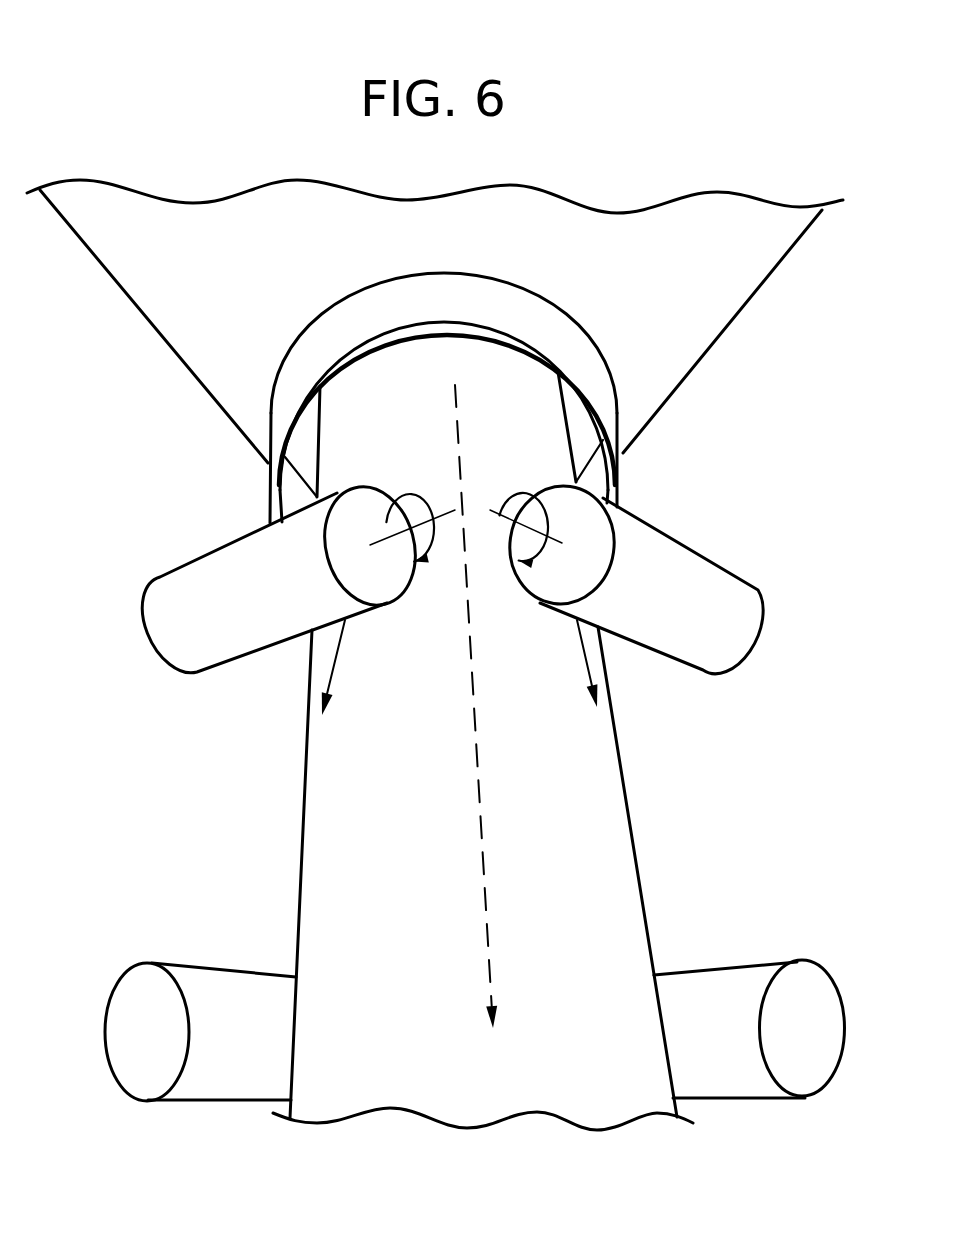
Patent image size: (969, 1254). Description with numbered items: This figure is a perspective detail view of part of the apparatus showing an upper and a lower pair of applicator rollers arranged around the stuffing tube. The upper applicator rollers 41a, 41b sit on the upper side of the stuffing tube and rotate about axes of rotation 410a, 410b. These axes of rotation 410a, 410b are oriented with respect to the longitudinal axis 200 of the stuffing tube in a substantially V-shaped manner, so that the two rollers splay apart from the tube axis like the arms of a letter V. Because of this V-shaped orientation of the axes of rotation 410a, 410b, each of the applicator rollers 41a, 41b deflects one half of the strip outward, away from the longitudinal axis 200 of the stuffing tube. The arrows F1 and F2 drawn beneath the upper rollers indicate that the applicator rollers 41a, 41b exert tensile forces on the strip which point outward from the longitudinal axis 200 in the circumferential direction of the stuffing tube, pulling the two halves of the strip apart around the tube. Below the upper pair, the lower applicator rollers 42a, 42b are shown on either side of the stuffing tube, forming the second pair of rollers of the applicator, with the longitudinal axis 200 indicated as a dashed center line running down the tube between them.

The applicator roller 41a is at (752, 598).
The applicator roller 41b is at (153, 604).
The axis of rotation 410a is at (499, 512).
The axis of rotation 410b is at (383, 505).
The applicator roller 42a is at (722, 978).
The applicator roller 42b is at (207, 975).
The longitudinal axis 200 is at (481, 823).
The arrow indicating tensile force F1 is at (592, 680).
The arrow indicating tensile force F2 is at (329, 684).